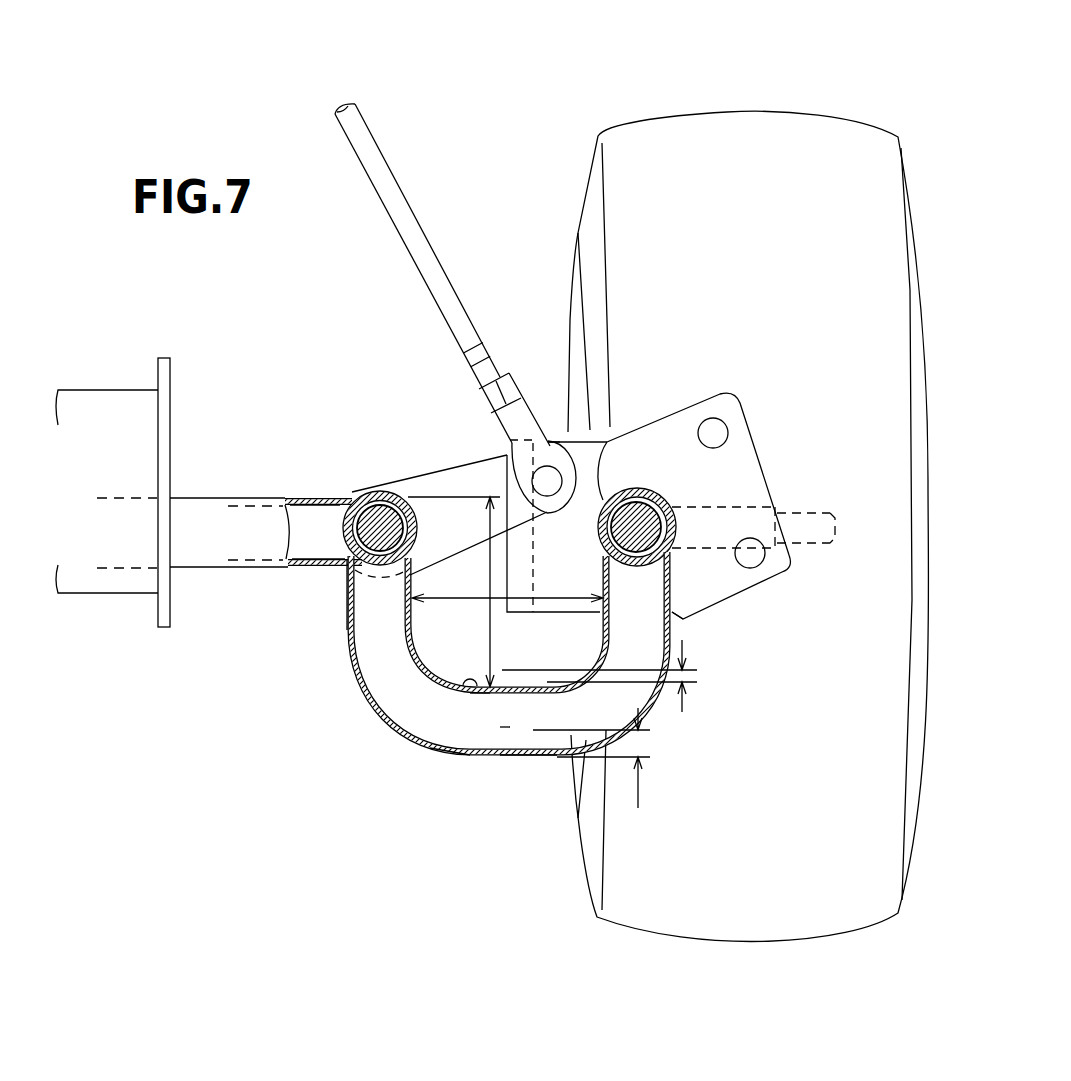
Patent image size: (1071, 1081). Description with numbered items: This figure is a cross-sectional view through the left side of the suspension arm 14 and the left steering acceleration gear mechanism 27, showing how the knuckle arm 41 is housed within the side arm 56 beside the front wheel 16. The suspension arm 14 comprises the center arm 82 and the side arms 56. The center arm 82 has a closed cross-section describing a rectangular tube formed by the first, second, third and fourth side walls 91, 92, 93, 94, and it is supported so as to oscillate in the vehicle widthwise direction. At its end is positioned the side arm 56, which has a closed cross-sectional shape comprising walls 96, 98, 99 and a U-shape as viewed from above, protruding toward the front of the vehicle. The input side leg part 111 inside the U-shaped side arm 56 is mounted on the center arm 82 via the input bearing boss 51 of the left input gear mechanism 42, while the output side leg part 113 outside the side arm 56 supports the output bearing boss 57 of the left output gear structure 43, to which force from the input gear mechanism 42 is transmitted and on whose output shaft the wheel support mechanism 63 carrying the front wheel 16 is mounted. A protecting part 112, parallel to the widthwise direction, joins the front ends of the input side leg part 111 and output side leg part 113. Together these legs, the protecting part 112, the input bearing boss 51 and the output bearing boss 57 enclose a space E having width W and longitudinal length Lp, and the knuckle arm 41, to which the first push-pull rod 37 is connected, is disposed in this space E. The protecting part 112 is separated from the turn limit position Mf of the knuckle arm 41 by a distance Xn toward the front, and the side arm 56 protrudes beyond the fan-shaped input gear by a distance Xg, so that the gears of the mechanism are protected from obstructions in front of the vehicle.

The suspension arm 14 is at (196, 475).
The front wheel 16 is at (768, 127).
The left steering acceleration gear mechanism 27 is at (500, 140).
The first push-pull rod 37 is at (390, 162).
The knuckle arm 41 is at (460, 460).
The left input gear mechanism 42 is at (397, 454).
The left output gear structure 43 is at (656, 461).
The input bearing boss 51 is at (425, 507).
The side arm 56 is at (418, 738).
The output bearing boss 57 is at (673, 503).
The wheel support mechanism 63 is at (562, 425).
The center arm 82 is at (226, 478).
The first side wall 91 is at (303, 567).
The second side wall 92 is at (264, 527).
The third side wall 93 is at (326, 527).
The fourth side wall 94 is at (345, 515).
The first wall 96 is at (443, 752).
The third wall 98 is at (480, 697).
The fourth wall 99 is at (505, 727).
The input side leg part 111 is at (343, 605).
The protecting part 112 is at (523, 758).
The output side leg part 113 is at (673, 595).
The space E is at (463, 628).
The length of space E Lp is at (454, 592).
The width of space E W is at (507, 583).
The turn limit position Mf is at (684, 658).
The distance Xn is at (618, 758).
The distance Xg is at (638, 833).